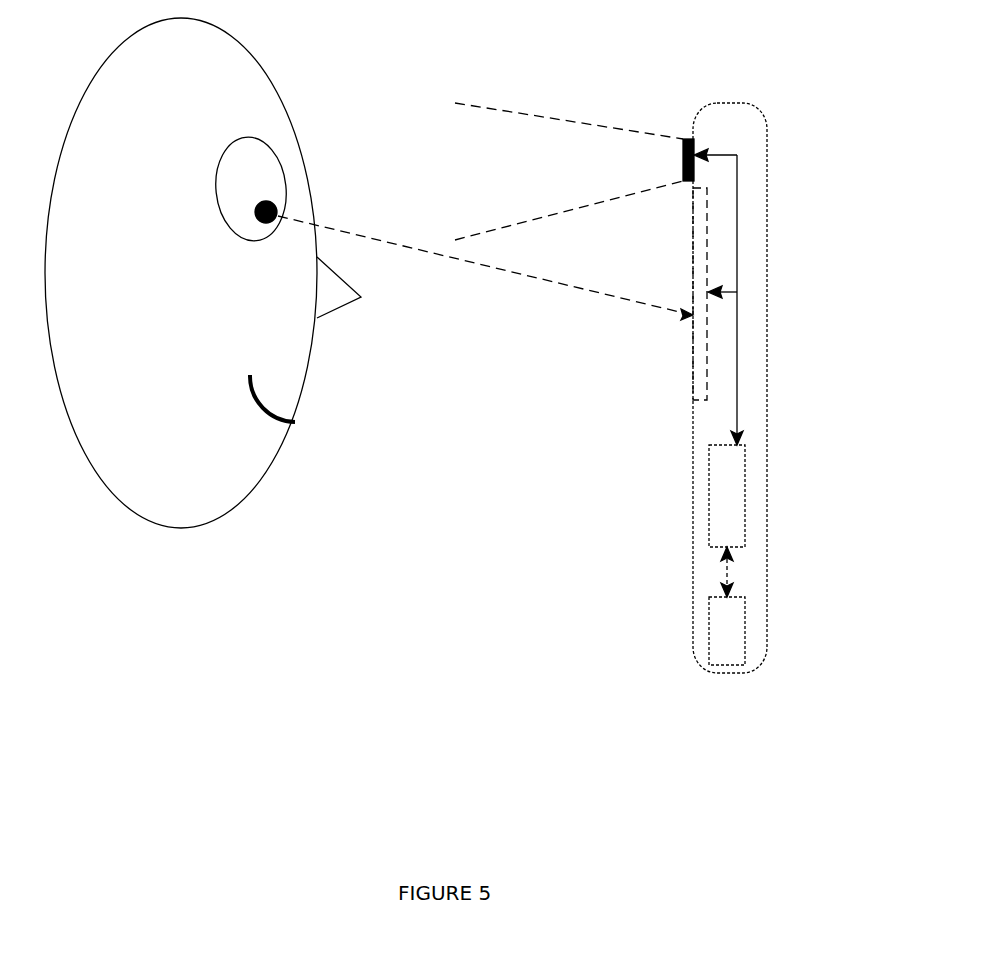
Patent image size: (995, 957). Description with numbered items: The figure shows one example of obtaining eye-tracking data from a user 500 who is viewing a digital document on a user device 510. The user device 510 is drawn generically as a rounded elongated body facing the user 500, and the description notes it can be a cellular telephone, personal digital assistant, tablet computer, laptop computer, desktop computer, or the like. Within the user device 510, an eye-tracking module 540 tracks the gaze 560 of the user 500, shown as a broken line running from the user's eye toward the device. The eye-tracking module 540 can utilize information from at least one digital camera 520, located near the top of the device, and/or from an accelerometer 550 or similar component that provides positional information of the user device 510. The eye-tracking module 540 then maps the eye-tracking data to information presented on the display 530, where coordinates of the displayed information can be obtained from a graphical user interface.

The user 500 is at (282, 452).
The user device 510 is at (730, 673).
The digital camera 520 is at (683, 153).
The display 530 is at (693, 375).
The eye-tracking module 540 is at (745, 495).
The accelerometer 550 is at (745, 613).
The gaze 560 is at (398, 246).